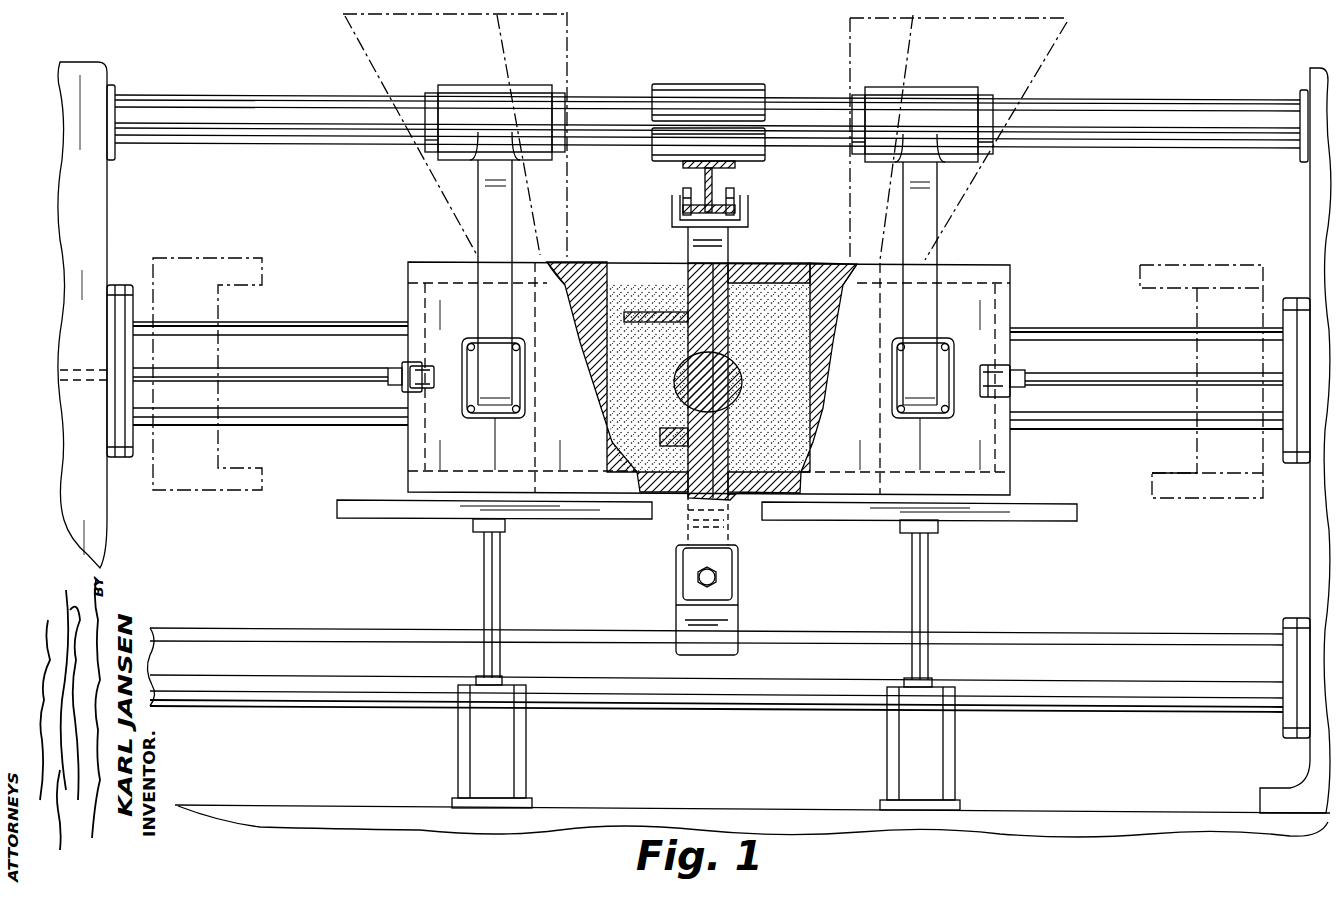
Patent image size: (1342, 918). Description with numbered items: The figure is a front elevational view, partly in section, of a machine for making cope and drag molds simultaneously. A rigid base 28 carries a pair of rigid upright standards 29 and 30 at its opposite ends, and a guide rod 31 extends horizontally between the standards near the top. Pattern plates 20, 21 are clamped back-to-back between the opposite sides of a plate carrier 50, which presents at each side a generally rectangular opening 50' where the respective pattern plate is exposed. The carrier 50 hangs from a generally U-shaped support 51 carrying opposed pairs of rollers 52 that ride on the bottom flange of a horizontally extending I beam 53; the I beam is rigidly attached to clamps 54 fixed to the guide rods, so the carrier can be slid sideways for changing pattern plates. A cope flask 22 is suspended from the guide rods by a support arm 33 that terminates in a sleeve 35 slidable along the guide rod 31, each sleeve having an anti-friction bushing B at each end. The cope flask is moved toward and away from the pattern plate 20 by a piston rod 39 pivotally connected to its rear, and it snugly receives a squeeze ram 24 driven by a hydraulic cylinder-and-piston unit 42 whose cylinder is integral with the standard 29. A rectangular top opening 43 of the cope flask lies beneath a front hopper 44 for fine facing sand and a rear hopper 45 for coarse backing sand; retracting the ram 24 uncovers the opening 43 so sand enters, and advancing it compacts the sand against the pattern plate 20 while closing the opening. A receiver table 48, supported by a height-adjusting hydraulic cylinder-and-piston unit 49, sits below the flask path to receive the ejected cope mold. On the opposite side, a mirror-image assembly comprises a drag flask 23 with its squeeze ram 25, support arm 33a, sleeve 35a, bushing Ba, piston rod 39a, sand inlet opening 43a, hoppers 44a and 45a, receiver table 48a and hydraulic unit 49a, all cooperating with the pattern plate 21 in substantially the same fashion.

The pattern plate 20 is at (728, 275).
The pattern plate 21 is at (690, 276).
The cope flask 22 is at (1178, 265).
The drag flask 23 is at (226, 258).
The squeeze ram 24 is at (1196, 448).
The squeeze ram 25 is at (220, 450).
The rigid base 28 is at (794, 811).
The upright standard 29 is at (1312, 196).
The upright standard 30 is at (100, 210).
The guide rod 31 is at (1152, 96).
The support arm 33 is at (926, 216).
The support arm 33a is at (486, 220).
The sleeve 35 is at (930, 96).
The sleeve 35a is at (460, 95).
The piston rod 39 is at (1145, 376).
The piston rod 39a is at (298, 370).
The hydraulic cylinder-and-piston unit 42 is at (1084, 326).
The rectangular top opening 43 is at (866, 310).
The sand inlet opening 43a is at (562, 266).
The front hopper 44 is at (846, 30).
The front hopper 44a is at (560, 32).
The rear hopper 45 is at (1040, 36).
The rear hopper 45a is at (350, 42).
The receiver table 48 is at (990, 522).
The receiver table 48a is at (386, 520).
The hydraulic cylinder-and-piston unit 49 is at (957, 756).
The hydraulic cylinder-and-piston unit 49a is at (530, 748).
The plate carrier 50 is at (706, 195).
The rectangular opening 50' is at (708, 377).
The U-shaped support 51 is at (748, 216).
The rollers 52 is at (688, 196).
The I beam 53 is at (735, 172).
The clamps 54 is at (652, 153).
The anti-friction bushing B is at (856, 92).
The anti-friction bushing Ba is at (420, 140).